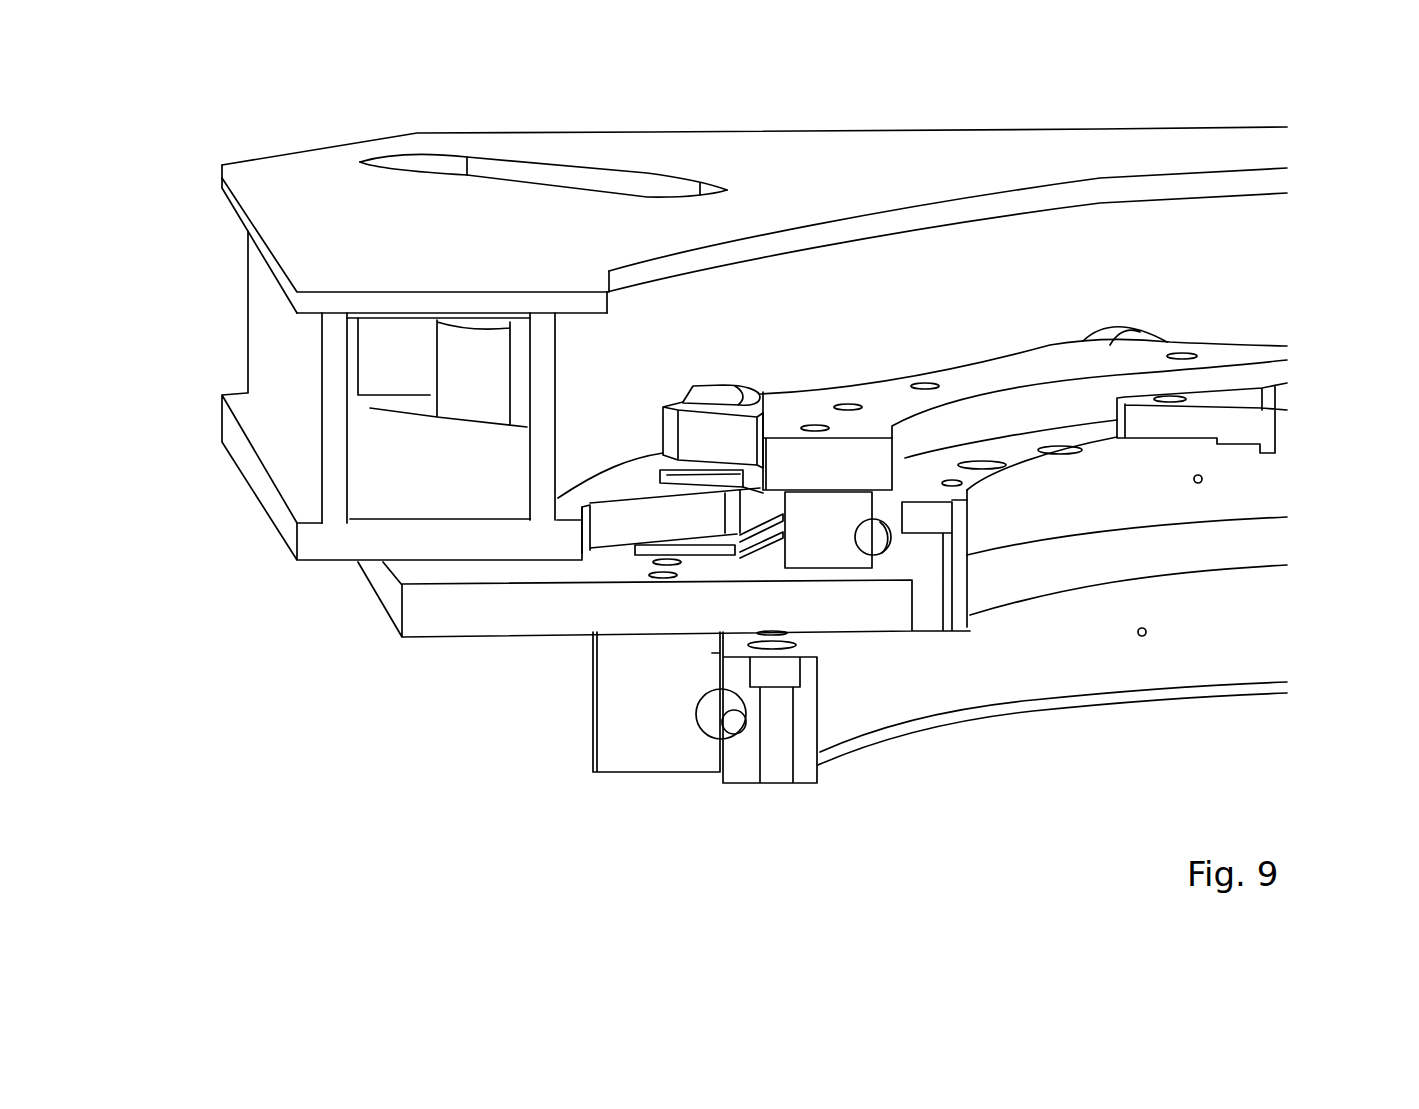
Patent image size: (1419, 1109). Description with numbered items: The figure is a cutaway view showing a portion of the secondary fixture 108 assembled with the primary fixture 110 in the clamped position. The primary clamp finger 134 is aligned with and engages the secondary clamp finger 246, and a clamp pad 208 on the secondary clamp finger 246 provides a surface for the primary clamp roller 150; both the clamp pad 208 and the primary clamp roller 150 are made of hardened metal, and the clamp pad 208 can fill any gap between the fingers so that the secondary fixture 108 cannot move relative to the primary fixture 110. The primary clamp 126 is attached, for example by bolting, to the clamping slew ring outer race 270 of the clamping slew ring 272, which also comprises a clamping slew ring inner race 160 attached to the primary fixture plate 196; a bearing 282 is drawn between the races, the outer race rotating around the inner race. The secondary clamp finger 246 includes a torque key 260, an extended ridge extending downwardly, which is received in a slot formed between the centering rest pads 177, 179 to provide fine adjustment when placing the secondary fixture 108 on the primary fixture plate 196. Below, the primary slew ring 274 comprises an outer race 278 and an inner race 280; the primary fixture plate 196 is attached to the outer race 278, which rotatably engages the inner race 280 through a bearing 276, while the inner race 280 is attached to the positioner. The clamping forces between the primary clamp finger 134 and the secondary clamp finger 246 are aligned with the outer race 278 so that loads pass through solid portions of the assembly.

The secondary fixture 108 is at (417, 118).
The primary fixture 110 is at (488, 820).
The primary clamp 126 is at (968, 377).
The primary clamp finger 134 is at (743, 433).
The primary clamp roller 150 is at (727, 393).
The clamping slew ring inner race 160 is at (975, 548).
The centering rest pad 177 is at (715, 552).
The centering rest pad 179 is at (773, 540).
The primary fixture plate 196 is at (1090, 550).
The clamp pad 208 is at (687, 480).
The secondary clamp finger 246 is at (612, 483).
The torque key 260 is at (770, 500).
The clamping slew ring outer race 270 is at (842, 553).
The clamping slew ring 272 is at (886, 602).
The primary slew ring 274 is at (697, 817).
The bearing 276 is at (717, 710).
The outer race 278 is at (628, 757).
The inner race 280 is at (802, 767).
The bearing 282 is at (870, 518).